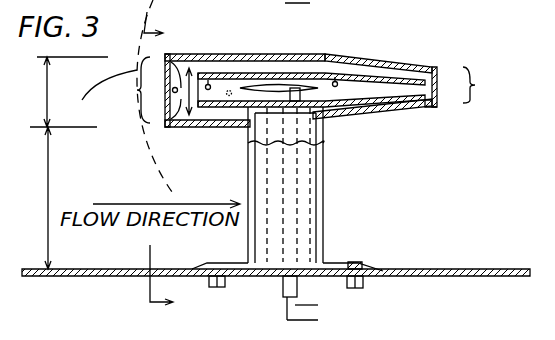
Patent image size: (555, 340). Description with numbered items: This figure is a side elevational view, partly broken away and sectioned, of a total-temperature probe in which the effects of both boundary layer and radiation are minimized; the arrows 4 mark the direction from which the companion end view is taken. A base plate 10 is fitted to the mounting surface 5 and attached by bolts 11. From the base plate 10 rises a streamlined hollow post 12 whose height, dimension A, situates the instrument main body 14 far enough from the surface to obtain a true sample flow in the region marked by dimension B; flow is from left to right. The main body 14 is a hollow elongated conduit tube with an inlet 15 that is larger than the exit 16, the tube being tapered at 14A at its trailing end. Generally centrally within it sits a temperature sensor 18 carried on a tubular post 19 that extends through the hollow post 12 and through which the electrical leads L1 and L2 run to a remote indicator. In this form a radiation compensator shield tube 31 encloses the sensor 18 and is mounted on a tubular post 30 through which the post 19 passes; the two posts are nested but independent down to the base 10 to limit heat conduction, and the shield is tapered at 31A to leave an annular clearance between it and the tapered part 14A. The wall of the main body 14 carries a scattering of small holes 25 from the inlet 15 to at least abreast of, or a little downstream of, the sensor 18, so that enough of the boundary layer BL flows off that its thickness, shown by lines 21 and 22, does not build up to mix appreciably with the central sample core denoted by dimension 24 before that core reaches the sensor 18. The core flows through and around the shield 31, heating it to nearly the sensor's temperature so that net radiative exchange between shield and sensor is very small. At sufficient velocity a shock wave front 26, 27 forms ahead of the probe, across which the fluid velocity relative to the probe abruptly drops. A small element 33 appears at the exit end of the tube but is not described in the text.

The arrows 4— 4 is at (167, 164).
The base plate / wall 5 is at (490, 269).
The base plate 10 is at (333, 263).
The bolts 11 is at (222, 268).
The hollow post 12 is at (323, 196).
The instrument main body 14 is at (260, 51).
The rear tapered part 14A is at (410, 64).
The inlet 15 is at (146, 90).
The exit 16 is at (485, 85).
The temperature sensor 18 is at (330, 92).
The tubular post 19 is at (305, 103).
The boundary layer line 21 is at (153, 90).
The boundary layer line 22 is at (446, 90).
The sample core dimension 24 is at (186, 91).
The small holes 25 is at (178, 56).
The shock wave front 26 is at (150, 10).
The shock wave front 27 is at (102, 99).
The tubular post 30 is at (283, 131).
The radiation compensator shield tube 31 is at (251, 73).
The tapered portion of shield 31A is at (377, 93).
The end bracket 33 is at (428, 104).
The boundary layer BL is at (395, 65).
The dimension A is at (44, 198).
The dimension B is at (69, 92).
The electrical lead L1 is at (318, 304).
The electrical lead L2 is at (313, 166).